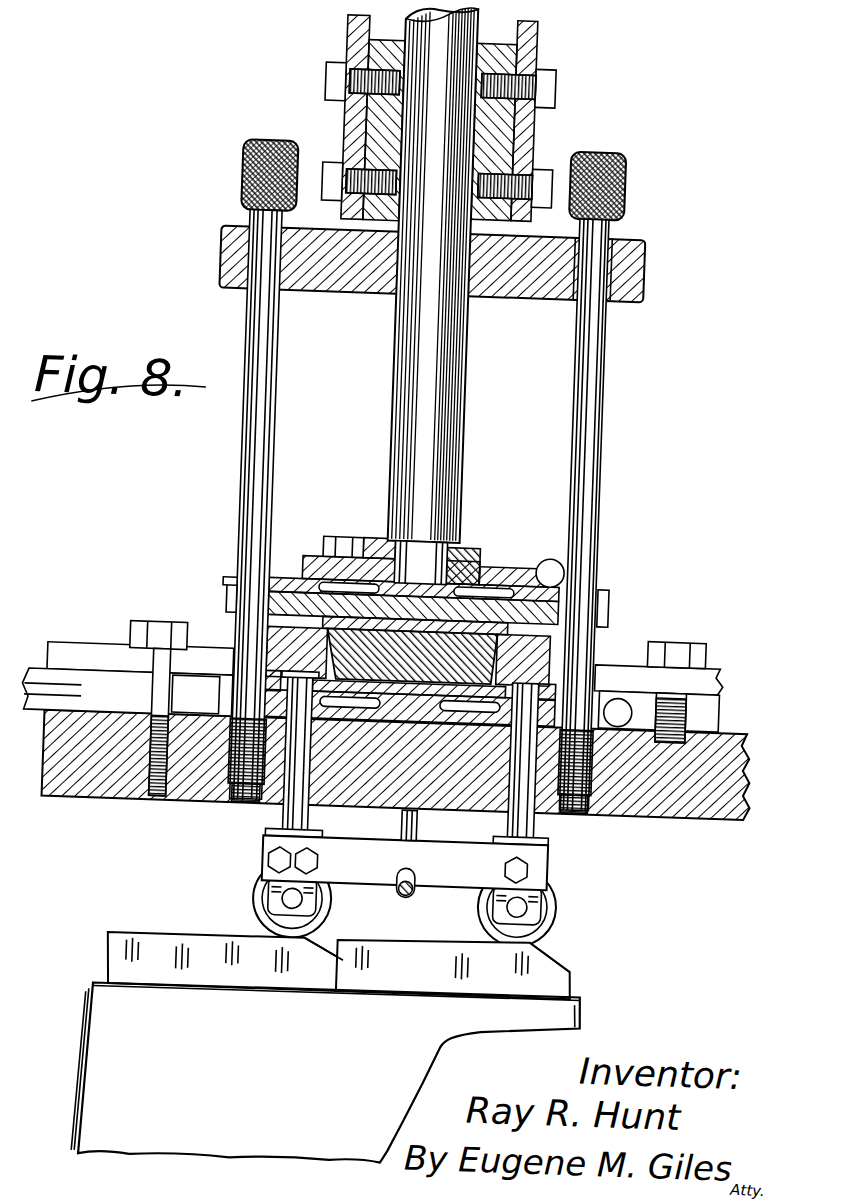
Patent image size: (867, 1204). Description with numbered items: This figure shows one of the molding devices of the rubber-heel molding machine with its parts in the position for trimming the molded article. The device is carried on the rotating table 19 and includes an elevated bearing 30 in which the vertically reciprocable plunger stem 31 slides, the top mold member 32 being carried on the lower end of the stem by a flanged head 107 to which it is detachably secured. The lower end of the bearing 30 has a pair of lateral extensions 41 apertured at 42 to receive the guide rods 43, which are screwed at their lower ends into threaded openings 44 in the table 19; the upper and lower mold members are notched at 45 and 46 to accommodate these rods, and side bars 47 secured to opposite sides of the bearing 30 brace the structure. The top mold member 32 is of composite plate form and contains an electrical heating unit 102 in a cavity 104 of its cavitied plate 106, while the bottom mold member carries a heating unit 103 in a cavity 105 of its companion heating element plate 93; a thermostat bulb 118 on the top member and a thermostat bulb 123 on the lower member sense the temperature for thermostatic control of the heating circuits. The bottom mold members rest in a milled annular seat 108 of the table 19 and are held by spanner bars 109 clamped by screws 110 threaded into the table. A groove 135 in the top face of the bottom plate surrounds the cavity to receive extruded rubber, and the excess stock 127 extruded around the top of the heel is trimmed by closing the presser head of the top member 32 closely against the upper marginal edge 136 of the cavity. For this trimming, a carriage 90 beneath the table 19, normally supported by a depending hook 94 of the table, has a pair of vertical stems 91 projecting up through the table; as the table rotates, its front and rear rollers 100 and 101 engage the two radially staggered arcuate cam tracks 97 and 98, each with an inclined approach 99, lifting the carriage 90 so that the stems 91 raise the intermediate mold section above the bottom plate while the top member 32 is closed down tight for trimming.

The table 19 is at (123, 794).
The elevated bearing 30 is at (483, 131).
The plunger stem 31 is at (432, 333).
The top mold member 32 is at (471, 525).
The lateral extensions 41 is at (207, 252).
The apertures 42 is at (600, 272).
The guide rods 43 is at (239, 318).
The threaded openings 44 is at (253, 806).
The notch 45 is at (234, 597).
The notch 46 is at (232, 705).
The side bars 47 is at (329, 40).
The carriage 90 is at (380, 854).
The vertical stems 91 is at (292, 823).
The heating element plate 93 is at (604, 684).
The depending hook 94 is at (427, 832).
The cam track 97 is at (188, 949).
The cam track 98 is at (459, 954).
The inclined approach 99 is at (344, 954).
The front roller 100 is at (267, 901).
The rear roller 101 is at (567, 899).
The heating unit 102 is at (496, 583).
The heating unit 103 is at (365, 710).
The cavity 104 is at (465, 547).
The cavity 105 is at (420, 710).
The cavitied plate 106 is at (515, 565).
The flanged head 107 is at (367, 542).
The milled annular seat 108 is at (130, 714).
The spanner bars 109 is at (111, 666).
The screws 110 is at (159, 635).
The thermostat bulb 118 is at (556, 571).
The thermostat bulb 123 is at (627, 706).
The extruded margin 127 is at (320, 564).
The groove 135 is at (273, 666).
The upper marginal edge 136 is at (267, 638).